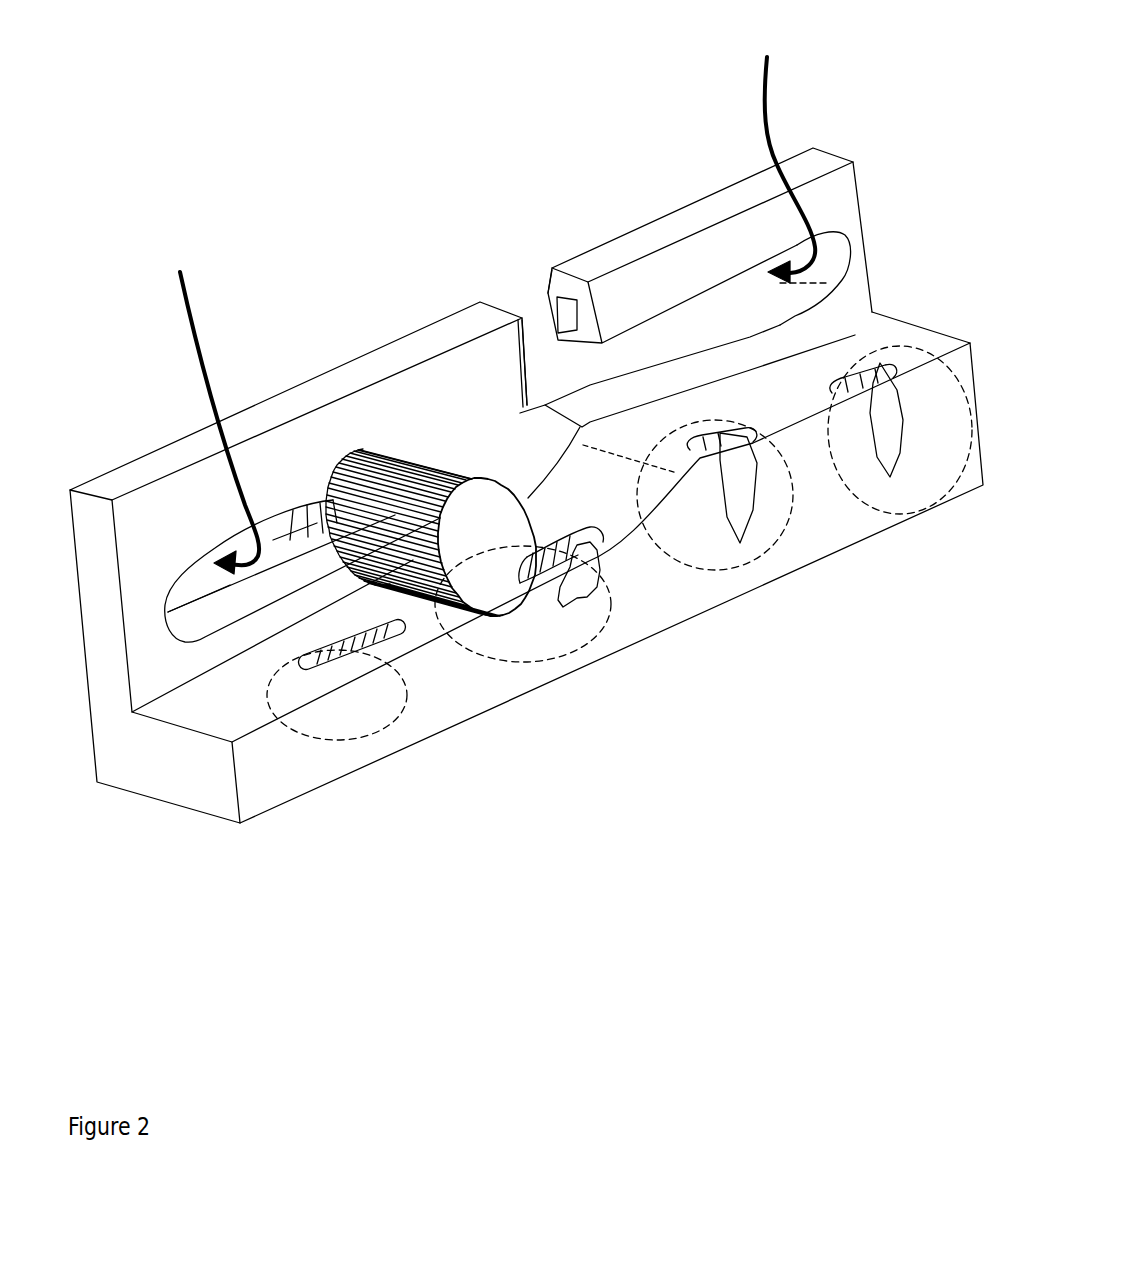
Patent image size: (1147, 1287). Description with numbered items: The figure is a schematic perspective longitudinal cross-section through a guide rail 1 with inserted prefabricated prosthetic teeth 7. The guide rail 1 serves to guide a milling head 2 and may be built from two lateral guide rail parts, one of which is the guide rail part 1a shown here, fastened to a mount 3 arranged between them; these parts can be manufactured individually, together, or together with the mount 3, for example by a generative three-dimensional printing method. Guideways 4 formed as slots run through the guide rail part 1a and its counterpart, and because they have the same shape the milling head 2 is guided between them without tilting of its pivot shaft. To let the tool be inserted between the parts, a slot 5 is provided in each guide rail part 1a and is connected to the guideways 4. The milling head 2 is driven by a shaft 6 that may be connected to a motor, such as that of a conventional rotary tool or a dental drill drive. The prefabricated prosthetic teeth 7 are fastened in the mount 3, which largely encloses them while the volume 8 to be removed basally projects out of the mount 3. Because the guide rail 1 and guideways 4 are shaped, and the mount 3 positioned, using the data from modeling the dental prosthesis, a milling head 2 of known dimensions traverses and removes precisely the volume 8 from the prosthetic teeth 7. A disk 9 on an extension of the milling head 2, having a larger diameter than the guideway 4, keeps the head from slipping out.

The guide rail 1 is at (362, 373).
The guide rail part 1a is at (667, 237).
The milling head 2 is at (475, 553).
The mount 3 is at (230, 707).
The guideway 4 is at (492, 300).
The slot 5 is at (528, 288).
The shaft 6 is at (328, 522).
The prefabricated prosthetic tooth 7 is at (338, 700).
The volume to be removed 8 is at (350, 645).
The disk 9 is at (283, 537).